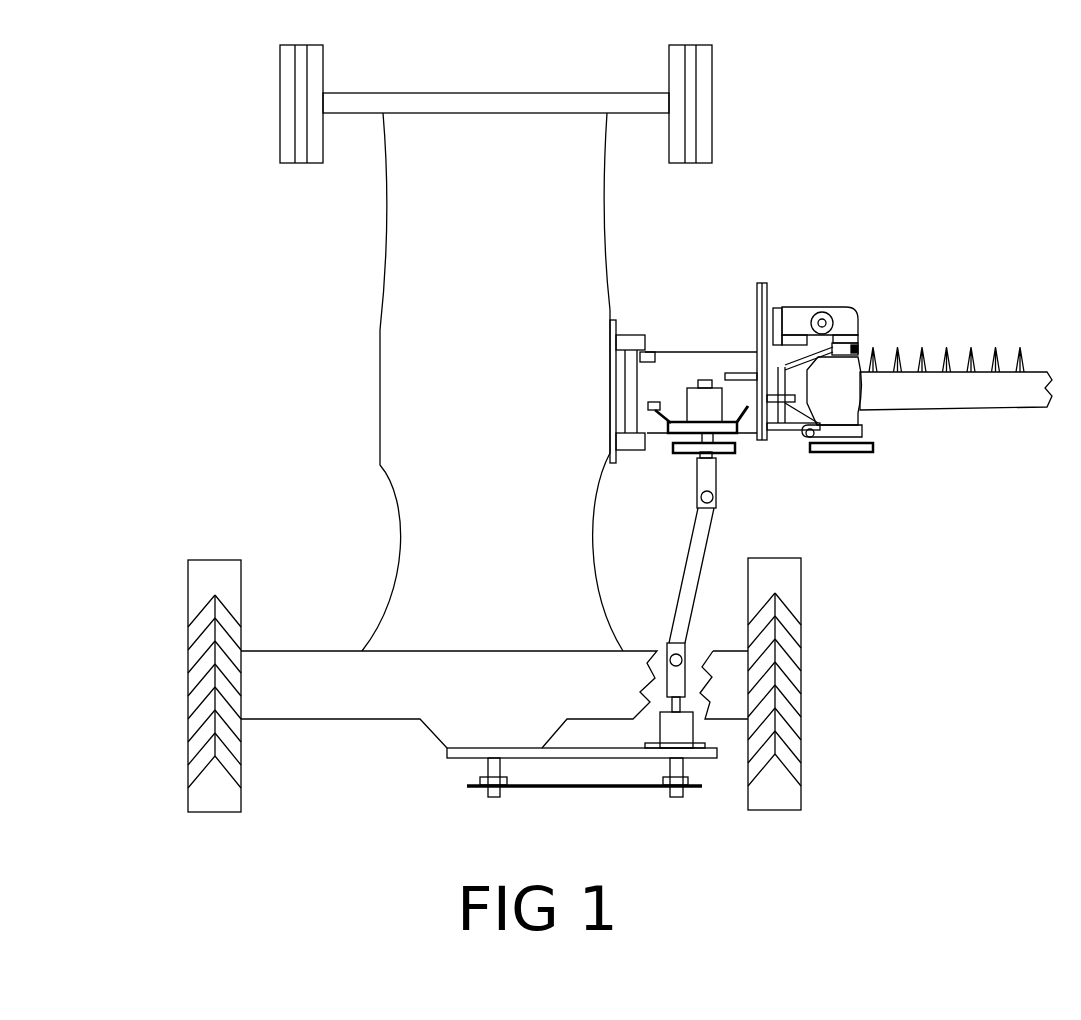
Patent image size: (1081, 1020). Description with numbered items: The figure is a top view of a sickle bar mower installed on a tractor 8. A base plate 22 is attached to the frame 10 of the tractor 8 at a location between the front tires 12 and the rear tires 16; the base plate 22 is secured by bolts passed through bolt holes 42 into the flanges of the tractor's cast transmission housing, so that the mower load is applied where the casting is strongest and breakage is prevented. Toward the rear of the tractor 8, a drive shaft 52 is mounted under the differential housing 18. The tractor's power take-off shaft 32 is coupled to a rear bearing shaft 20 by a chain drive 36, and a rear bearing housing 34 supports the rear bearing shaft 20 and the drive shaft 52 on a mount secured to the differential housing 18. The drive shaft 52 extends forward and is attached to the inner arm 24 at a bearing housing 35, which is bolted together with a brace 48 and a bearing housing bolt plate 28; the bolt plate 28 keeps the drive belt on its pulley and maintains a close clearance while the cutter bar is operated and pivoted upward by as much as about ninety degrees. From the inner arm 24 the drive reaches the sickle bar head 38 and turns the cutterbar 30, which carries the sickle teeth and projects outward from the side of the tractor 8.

The tractor 8 is at (458, 458).
The frame 10 is at (388, 223).
The front tires 12 is at (300, 108).
The rear tires 16 is at (215, 685).
The differential housing 18 is at (400, 688).
The rear bearing shaft 20 is at (673, 793).
The base plate 22 is at (613, 318).
The inner arm 24 is at (690, 370).
The bearing housing bolt plate 28 is at (728, 432).
The cutterbar 30 is at (932, 390).
The power take-off shaft 32 is at (492, 793).
The rear bearing housing 34 is at (677, 727).
The bearing housing 35 is at (707, 388).
The chain drive 36 is at (587, 788).
The sickle bar head 38 is at (845, 388).
The bolt holes 42 is at (655, 355).
The brace 48 is at (760, 428).
The drive shaft 52 is at (690, 575).